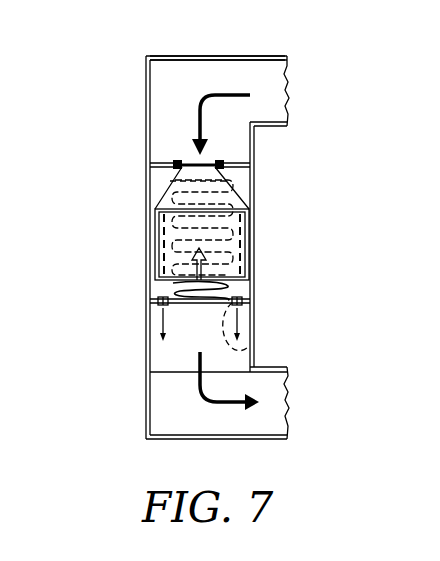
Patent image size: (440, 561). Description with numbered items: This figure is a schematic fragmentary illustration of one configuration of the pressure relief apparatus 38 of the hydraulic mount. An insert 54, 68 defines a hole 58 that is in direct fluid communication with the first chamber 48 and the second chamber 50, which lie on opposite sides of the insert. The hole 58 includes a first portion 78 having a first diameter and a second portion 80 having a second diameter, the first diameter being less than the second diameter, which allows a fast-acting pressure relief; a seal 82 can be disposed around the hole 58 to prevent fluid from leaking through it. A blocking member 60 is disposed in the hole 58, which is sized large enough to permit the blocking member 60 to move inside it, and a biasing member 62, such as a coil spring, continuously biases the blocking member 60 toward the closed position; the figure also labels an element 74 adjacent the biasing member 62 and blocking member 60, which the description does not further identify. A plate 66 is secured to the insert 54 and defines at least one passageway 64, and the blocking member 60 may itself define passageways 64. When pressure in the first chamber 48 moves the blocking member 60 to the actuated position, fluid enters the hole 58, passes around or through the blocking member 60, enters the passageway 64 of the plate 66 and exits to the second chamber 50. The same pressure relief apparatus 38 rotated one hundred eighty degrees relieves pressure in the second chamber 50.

The pressure relief apparatus 38 is at (126, 77).
The first chamber 48 is at (323, 101).
The second chamber 50 is at (323, 420).
The insert 54 is at (217, 33).
The insert 68 is at (213, 57).
The hole 58 is at (257, 154).
The first portion 78 is at (214, 162).
The second portion 80 is at (160, 180).
The seal 82 is at (176, 163).
The blocking member 60 is at (249, 247).
The passageway 64 is at (165, 237).
The biasing member 62 is at (165, 284).
The valve 74 is at (212, 277).
The plate 66 is at (242, 305).